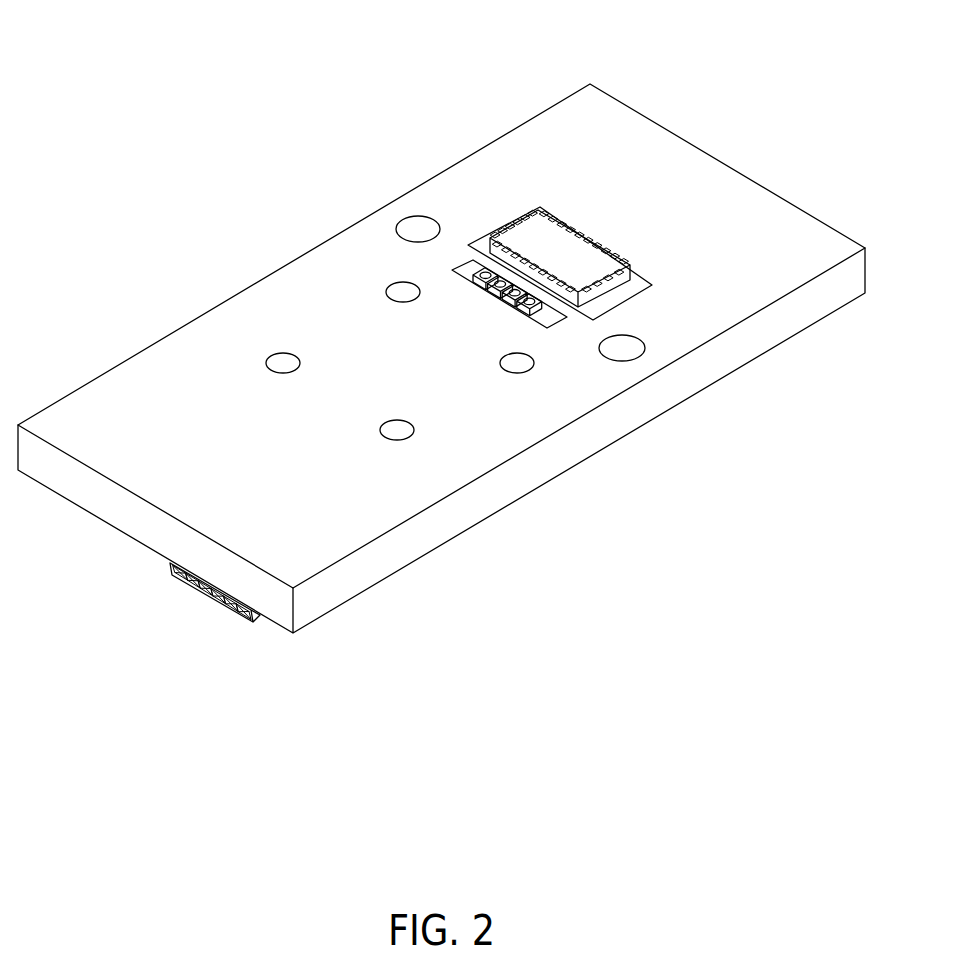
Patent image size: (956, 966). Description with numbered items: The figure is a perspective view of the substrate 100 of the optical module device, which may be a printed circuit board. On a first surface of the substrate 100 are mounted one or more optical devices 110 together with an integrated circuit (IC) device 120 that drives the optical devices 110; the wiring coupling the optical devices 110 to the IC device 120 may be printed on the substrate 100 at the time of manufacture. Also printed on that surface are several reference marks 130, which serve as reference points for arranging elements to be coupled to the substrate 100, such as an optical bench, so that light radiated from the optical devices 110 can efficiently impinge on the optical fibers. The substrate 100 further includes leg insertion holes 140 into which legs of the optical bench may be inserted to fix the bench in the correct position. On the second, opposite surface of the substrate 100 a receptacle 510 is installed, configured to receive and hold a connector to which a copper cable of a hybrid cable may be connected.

The substrate 100 is at (170, 332).
The optical devices 110 is at (543, 310).
The integrated circuit (IC) device 120 is at (532, 230).
The reference marks 130 is at (417, 226).
The leg insertion holes 140 is at (400, 432).
The receptacle 510 is at (208, 603).